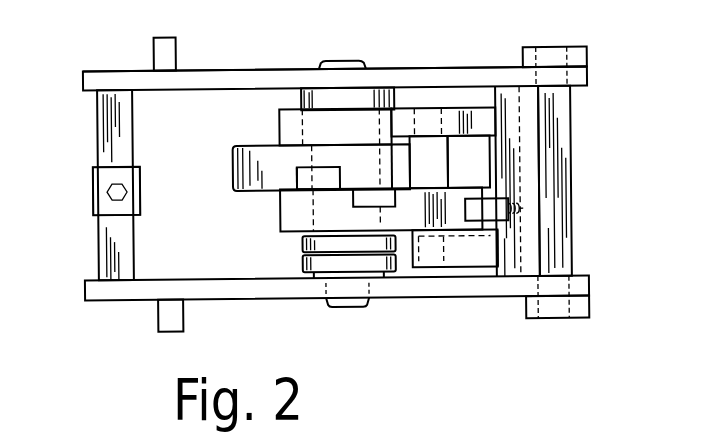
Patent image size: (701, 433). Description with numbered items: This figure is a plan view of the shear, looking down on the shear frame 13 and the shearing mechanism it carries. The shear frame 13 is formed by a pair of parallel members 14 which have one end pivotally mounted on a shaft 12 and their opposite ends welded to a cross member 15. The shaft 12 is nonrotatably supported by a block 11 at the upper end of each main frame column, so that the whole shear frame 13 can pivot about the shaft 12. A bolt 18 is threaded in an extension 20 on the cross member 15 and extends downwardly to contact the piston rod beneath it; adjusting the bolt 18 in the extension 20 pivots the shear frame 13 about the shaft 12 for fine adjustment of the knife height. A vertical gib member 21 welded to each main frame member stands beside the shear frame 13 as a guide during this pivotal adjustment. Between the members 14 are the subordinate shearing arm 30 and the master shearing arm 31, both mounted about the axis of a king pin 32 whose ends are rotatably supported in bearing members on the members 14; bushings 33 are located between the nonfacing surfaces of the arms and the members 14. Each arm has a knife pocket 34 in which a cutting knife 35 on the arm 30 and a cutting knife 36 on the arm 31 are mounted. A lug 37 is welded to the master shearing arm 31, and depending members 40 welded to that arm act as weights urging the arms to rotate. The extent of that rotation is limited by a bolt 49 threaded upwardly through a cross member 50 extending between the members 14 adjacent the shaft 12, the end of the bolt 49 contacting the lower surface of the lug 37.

The block 11 is at (552, 53).
The shaft 12 is at (558, 172).
The shear frame 13 is at (437, 67).
The parallel members 14 is at (225, 80).
The cross member 15 is at (112, 116).
The bolt 18 is at (103, 204).
The extension 20 is at (97, 212).
The vertical gib member 21 is at (163, 52).
The subordinate shearing arm 30 is at (246, 162).
The master shearing arm 31 is at (287, 222).
The king pin 32 is at (348, 307).
The bushings 33 is at (303, 99).
The knife pocket 34 is at (298, 179).
The cutting knife 35 is at (327, 173).
The cutting knife 36 is at (363, 203).
The lug 37 is at (490, 214).
The depending members 40 is at (432, 257).
The bolt 49 is at (523, 208).
The cross member 50 is at (530, 147).